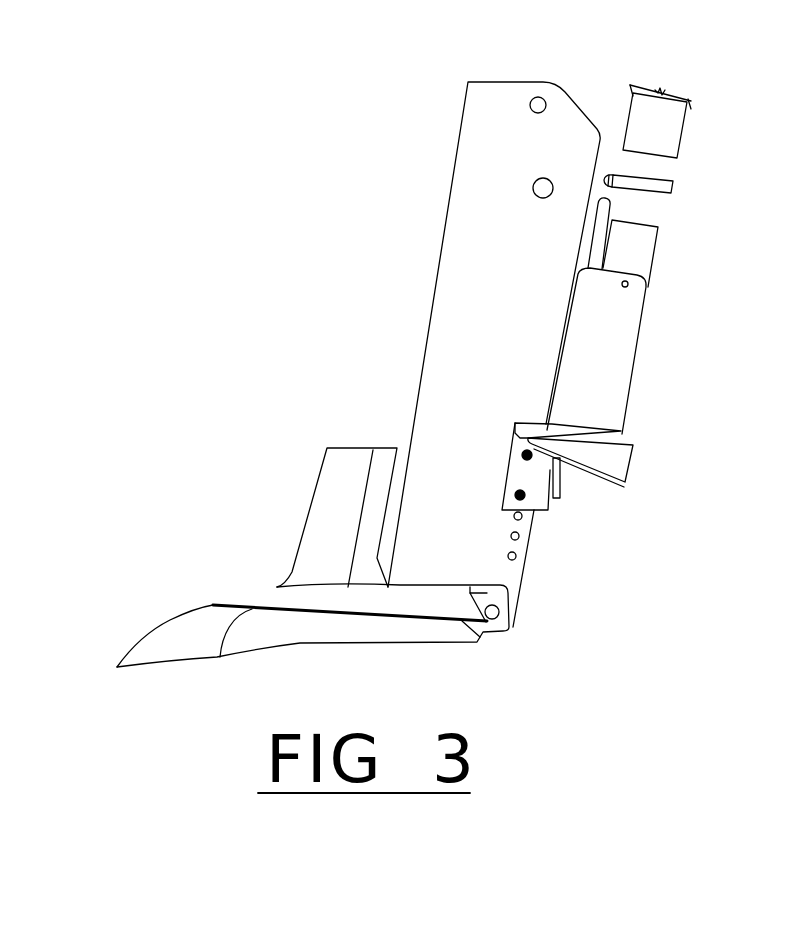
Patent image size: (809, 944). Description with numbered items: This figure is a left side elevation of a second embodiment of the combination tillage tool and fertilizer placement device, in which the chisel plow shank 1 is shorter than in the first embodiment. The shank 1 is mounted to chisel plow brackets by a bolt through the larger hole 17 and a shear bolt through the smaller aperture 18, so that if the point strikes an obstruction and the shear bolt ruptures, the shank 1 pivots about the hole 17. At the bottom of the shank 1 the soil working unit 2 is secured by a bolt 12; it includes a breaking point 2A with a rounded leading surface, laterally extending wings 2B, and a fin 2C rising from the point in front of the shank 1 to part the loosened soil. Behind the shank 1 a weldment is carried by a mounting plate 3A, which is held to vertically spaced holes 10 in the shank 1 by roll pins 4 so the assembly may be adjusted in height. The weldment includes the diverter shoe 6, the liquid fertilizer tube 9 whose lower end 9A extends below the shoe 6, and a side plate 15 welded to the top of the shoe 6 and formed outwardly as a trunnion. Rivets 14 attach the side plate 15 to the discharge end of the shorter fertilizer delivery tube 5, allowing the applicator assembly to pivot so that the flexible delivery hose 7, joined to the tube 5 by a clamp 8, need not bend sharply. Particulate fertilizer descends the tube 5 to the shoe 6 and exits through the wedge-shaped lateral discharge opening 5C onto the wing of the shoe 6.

The chisel plow shank 1 is at (432, 274).
The soil working unit 2 is at (402, 645).
The breaking point 2A is at (168, 622).
The wings 2B is at (480, 637).
The fin 2C is at (318, 478).
The mounting plate 3A is at (547, 510).
The roll pins 4 is at (516, 492).
The fertilizer delivery tube 5 is at (657, 248).
The lateral discharge opening 5C is at (573, 433).
The diverter shoe 6 is at (630, 467).
The fertilizer delivery hose 7 is at (683, 128).
The clamp 8 is at (675, 187).
The liquid fertilizer tube 9 is at (611, 210).
The liquid fertilizer tube lower end 9A is at (562, 482).
The holes 10 is at (522, 518).
The bolt 12 is at (499, 612).
The rivets 14 is at (628, 286).
The side plate 15 is at (632, 378).
The larger hole 17 is at (533, 185).
The smaller aperture 18 is at (536, 97).